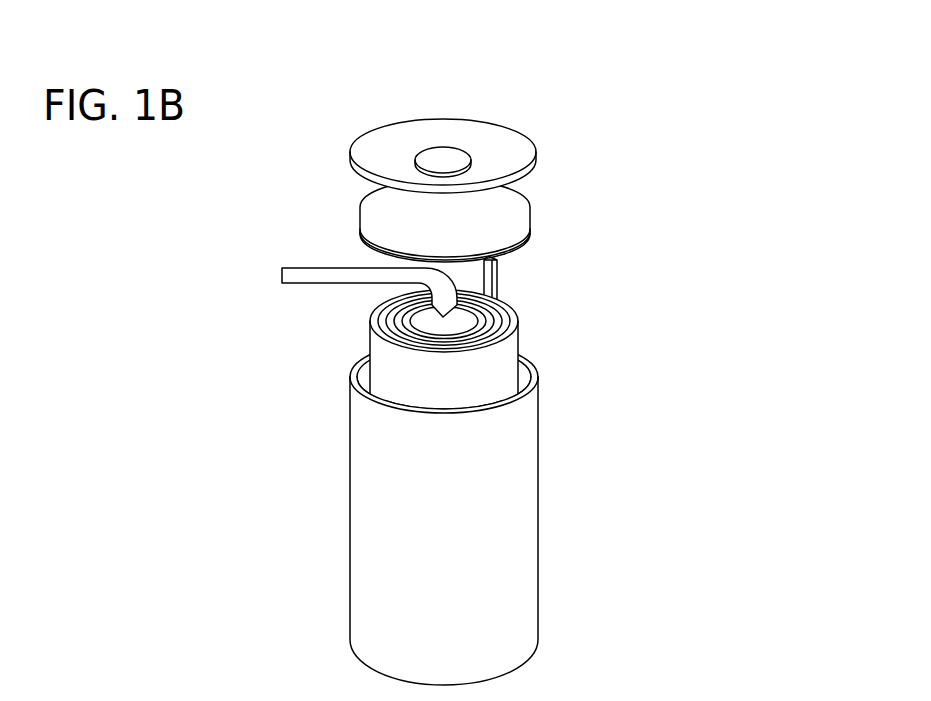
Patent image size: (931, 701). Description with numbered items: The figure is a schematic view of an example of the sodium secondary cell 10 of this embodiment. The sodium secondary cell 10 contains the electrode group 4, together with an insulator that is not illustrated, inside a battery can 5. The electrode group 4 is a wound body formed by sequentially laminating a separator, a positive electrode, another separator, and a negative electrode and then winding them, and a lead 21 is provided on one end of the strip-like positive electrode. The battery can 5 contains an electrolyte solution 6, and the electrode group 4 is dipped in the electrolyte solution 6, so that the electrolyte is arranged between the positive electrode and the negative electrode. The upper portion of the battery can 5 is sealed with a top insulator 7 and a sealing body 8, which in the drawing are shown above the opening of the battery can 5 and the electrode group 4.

The sodium secondary cell 10 is at (660, 248).
The electrode group 4 is at (378, 366).
The battery can 5 is at (412, 487).
The electrolyte solution 6 is at (310, 273).
The top insulator 7 is at (513, 220).
The sealing body 8 is at (513, 157).
The lead 21 is at (492, 277).